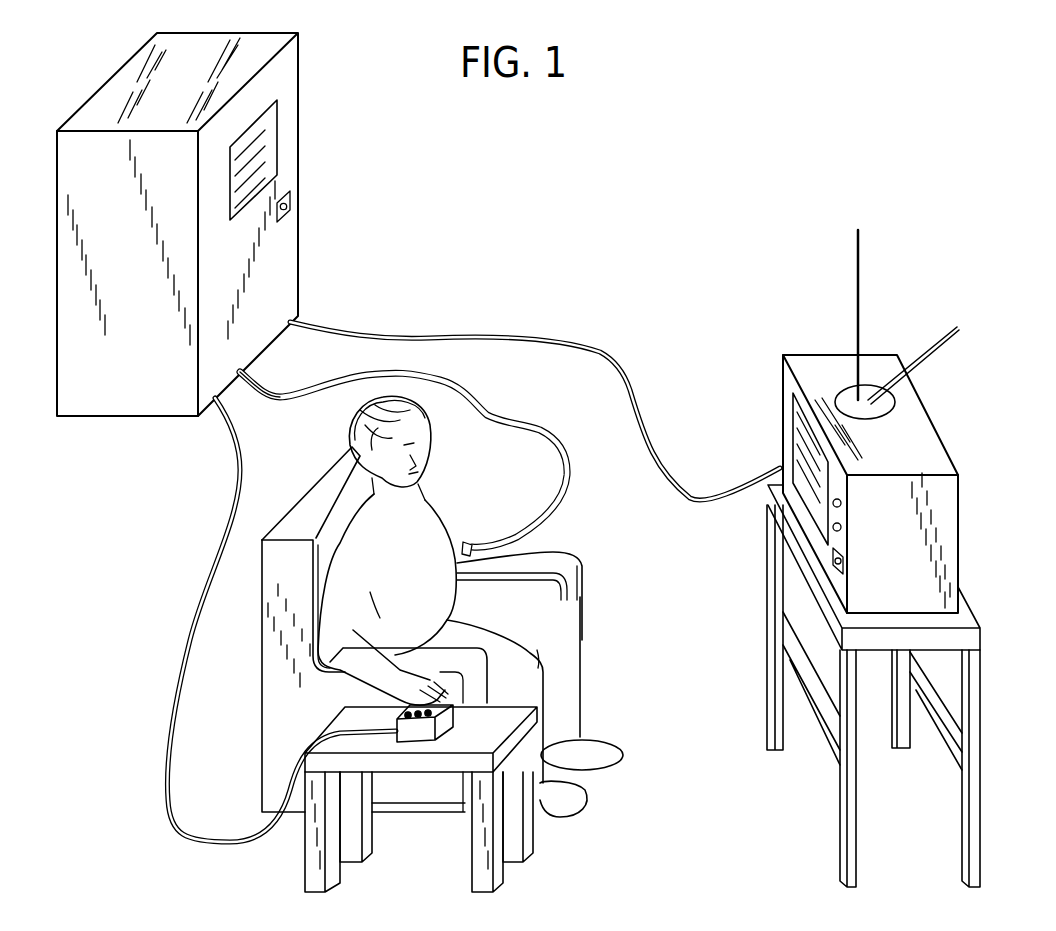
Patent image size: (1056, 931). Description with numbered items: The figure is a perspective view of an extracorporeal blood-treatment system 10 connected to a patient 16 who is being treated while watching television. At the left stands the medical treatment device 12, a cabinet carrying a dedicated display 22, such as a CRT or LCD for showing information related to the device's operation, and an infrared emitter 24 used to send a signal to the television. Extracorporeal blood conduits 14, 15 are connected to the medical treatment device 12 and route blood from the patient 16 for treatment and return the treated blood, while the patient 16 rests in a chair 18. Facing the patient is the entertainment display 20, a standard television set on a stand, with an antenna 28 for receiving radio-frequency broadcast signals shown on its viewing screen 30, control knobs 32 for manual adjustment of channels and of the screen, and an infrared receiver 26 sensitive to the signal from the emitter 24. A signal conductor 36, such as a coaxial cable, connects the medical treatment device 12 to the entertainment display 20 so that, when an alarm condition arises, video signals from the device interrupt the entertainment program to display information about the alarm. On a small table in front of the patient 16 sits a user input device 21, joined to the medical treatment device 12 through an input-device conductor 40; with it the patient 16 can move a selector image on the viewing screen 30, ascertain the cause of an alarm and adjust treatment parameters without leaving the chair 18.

The extracorporeal blood-treatment system 10 is at (636, 259).
The medical treatment device 12 is at (292, 75).
The extracorporeal blood conduit 14 is at (488, 412).
The extracorporeal blood conduit 15 is at (282, 400).
The patient 16 is at (440, 492).
The chair 18 is at (282, 665).
The entertainment display 20 is at (947, 505).
The user input device 21 is at (418, 742).
The dedicated display 22 is at (273, 145).
The infrared emitter 24 is at (290, 207).
The infrared receiver 26 is at (834, 562).
The antenna 28 is at (885, 400).
The viewing screen 30 is at (798, 425).
The control knobs 32 is at (843, 528).
The signal conductor 36 is at (592, 345).
The input-device conductor 40 is at (160, 792).